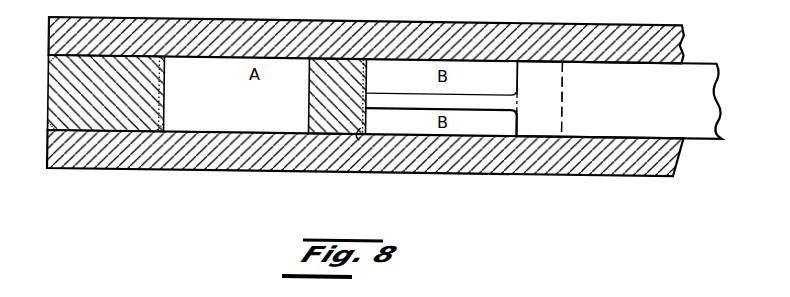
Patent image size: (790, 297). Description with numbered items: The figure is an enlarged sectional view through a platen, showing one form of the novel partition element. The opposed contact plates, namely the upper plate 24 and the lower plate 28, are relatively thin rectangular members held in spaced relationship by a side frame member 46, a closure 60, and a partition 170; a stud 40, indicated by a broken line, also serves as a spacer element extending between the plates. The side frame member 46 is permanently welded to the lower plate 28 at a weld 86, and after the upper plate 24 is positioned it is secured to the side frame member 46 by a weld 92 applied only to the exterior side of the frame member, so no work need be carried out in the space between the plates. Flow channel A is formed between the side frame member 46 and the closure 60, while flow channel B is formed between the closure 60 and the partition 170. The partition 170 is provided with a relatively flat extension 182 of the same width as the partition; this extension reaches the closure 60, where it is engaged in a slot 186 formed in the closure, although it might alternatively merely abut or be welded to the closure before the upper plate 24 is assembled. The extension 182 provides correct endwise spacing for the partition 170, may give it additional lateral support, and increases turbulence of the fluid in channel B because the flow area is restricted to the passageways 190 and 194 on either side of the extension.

The upper plate 24 is at (253, 35).
The lower plate 28 is at (219, 168).
The side frame member 46 is at (49, 96).
The weld 92 is at (50, 53).
The weld 86 is at (49, 128).
The closure 60 is at (310, 102).
The slot 186 is at (361, 136).
The partition 170 is at (698, 121).
The passageway 190 is at (462, 80).
The passageway 194 is at (461, 119).
The extension 182 is at (487, 106).
The stud 40 is at (551, 100).